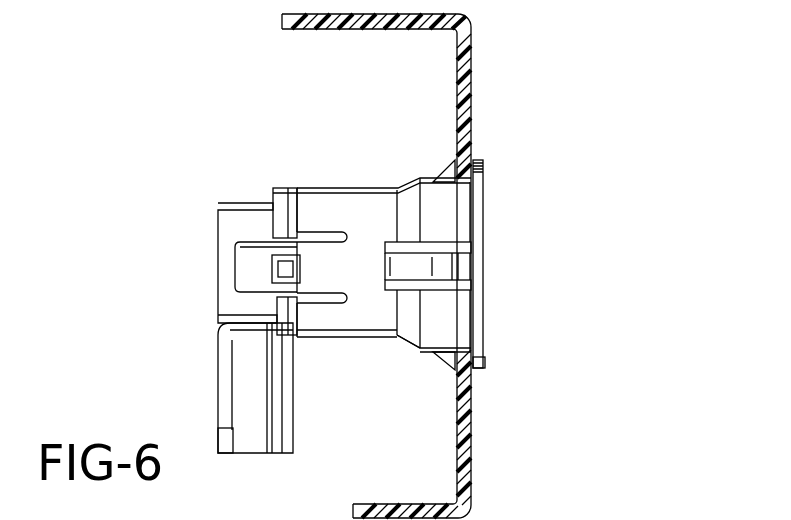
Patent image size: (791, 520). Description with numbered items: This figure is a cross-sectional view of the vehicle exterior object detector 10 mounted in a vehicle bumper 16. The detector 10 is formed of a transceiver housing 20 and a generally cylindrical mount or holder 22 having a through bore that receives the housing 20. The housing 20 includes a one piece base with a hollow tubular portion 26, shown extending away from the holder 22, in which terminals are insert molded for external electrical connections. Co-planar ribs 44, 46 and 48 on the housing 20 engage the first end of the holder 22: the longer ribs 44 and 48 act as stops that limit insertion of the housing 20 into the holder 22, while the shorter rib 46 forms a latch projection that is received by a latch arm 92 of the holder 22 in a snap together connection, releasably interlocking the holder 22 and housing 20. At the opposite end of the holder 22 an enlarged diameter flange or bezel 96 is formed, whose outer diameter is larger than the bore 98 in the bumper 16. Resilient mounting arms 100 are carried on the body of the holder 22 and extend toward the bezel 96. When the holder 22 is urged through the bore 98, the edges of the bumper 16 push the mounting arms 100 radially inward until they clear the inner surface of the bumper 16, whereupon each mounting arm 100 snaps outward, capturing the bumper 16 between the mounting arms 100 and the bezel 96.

The vehicle exterior object detector 10 is at (171, 197).
The rear bumper 16 is at (473, 82).
The transceiver housing 20 is at (216, 318).
The mount 22 is at (328, 187).
The tubular portion 26 is at (230, 378).
The rib 44 is at (280, 188).
The rib 46 is at (284, 266).
The rib 48 is at (298, 338).
The latch arm 92 is at (248, 272).
The bezel 96 is at (484, 159).
The bore 98 is at (463, 343).
The mounting arm 100 is at (443, 165).